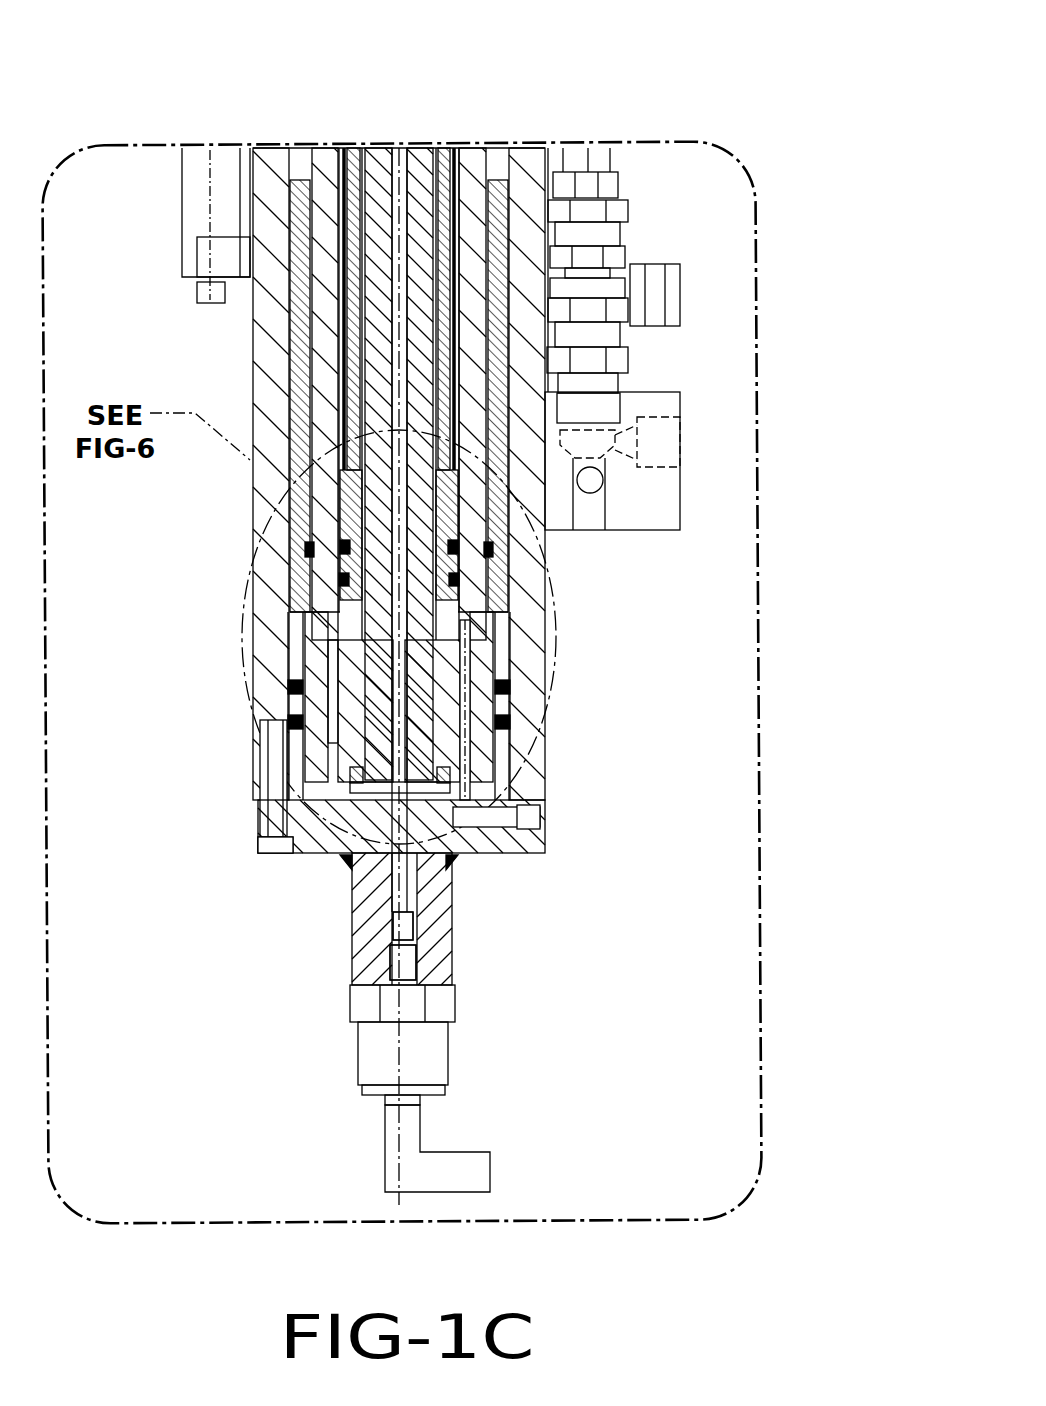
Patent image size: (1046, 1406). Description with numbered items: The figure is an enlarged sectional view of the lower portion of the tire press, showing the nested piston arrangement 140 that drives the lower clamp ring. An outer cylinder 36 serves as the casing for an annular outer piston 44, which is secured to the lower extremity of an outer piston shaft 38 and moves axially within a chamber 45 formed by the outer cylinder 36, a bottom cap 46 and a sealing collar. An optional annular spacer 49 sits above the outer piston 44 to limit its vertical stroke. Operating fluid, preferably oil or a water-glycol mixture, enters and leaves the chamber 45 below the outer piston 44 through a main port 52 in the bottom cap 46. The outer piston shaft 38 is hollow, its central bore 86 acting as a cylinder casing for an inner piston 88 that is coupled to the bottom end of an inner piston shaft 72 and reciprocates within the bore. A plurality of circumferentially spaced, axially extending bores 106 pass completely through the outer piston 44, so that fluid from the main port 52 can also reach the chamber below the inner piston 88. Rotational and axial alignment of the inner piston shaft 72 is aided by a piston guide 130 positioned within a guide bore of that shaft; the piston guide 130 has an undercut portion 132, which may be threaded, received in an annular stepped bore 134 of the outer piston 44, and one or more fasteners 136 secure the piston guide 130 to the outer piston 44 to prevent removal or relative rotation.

The assembly enclosure 140 is at (676, 634).
The outer cylinder 36 is at (272, 300).
The chamber 45 is at (300, 150).
The outer piston shaft 38 is at (503, 148).
The annular spacer 49 is at (305, 405).
The central bore 86 is at (345, 148).
The piston guide 130 is at (440, 260).
The inner piston shaft 72 is at (456, 148).
The inner piston 88 is at (310, 520).
The outer piston 44 is at (310, 660).
The undercut portion 132 is at (318, 698).
The annular stepped bore 134 is at (300, 738).
The bores 106 is at (310, 770).
The fasteners 136 is at (470, 720).
The bottom cap 46 is at (290, 812).
The main port 52 is at (493, 818).